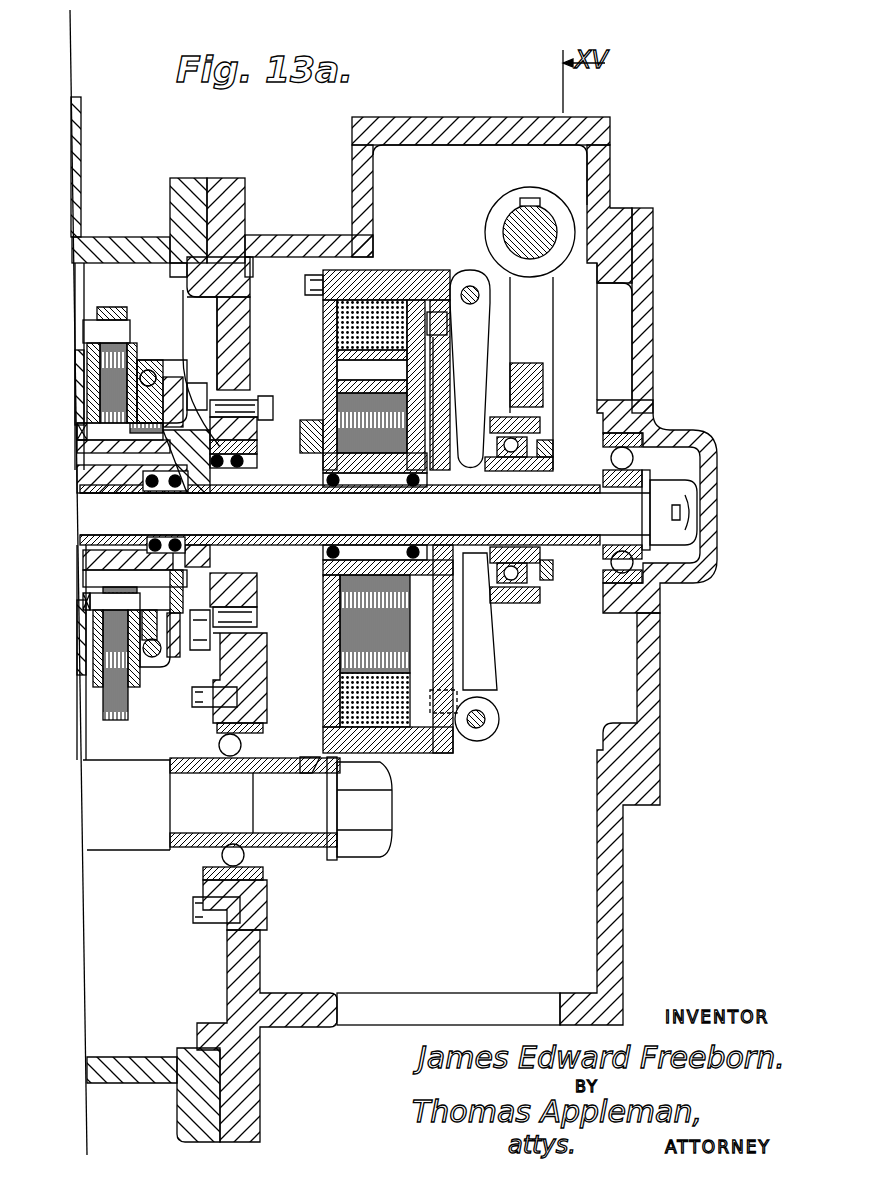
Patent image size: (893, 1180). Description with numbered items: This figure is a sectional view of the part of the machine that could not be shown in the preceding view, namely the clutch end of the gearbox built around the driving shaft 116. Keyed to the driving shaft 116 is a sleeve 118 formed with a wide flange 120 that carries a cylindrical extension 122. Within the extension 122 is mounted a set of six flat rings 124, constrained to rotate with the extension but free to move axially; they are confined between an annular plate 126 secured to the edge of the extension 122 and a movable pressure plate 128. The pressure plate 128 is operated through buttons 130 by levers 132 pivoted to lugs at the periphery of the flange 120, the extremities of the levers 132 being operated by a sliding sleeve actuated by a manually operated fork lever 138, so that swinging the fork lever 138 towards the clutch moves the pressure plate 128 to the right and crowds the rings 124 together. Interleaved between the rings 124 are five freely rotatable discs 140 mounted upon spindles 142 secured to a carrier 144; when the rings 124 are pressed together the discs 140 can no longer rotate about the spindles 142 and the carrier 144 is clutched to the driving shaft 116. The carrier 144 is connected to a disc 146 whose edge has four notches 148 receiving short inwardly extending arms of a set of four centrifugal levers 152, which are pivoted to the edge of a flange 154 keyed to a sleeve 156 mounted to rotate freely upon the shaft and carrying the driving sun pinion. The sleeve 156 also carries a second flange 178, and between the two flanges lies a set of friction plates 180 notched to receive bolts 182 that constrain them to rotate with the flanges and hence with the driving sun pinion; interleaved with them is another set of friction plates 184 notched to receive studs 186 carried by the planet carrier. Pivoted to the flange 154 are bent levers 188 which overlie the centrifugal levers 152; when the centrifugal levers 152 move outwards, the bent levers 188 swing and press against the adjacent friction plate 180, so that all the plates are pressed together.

The driving shaft 116 is at (668, 583).
The sleeve 118 is at (612, 520).
The wide flange 120 is at (440, 343).
The cylindrical extension 122 is at (375, 275).
The flat rings 124 is at (400, 283).
The annular plate 126 is at (318, 311).
The pressure plate 128 is at (415, 297).
The buttons 130 is at (447, 323).
The levers 132 is at (473, 393).
The fork lever 138 is at (527, 326).
The freely rotatable discs 140 is at (380, 478).
The spindles 142 is at (345, 370).
The carrier 144 is at (330, 626).
The disc 146 is at (257, 630).
The notches 148 is at (240, 395).
The centrifugal levers 152 is at (178, 360).
The flange 154 is at (148, 370).
The sleeve 156 is at (203, 547).
The second flange 178 is at (180, 493).
The friction plates 180 is at (125, 455).
The bolts 182 is at (107, 440).
The friction plates 184 is at (123, 313).
The studs 186 is at (93, 313).
The bent levers 188 is at (247, 305).